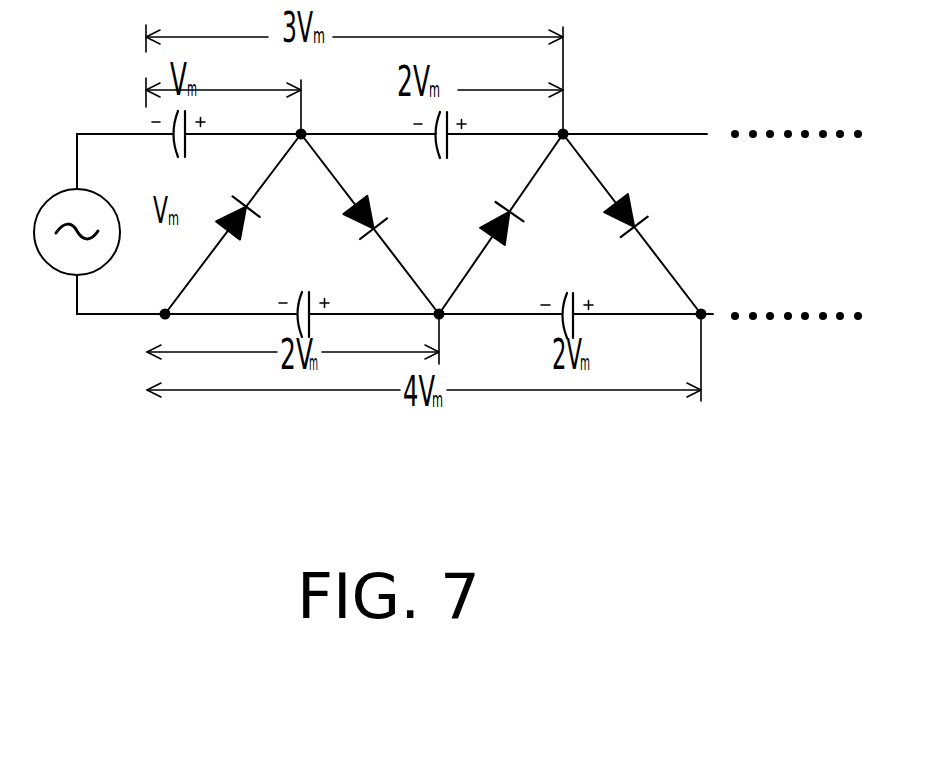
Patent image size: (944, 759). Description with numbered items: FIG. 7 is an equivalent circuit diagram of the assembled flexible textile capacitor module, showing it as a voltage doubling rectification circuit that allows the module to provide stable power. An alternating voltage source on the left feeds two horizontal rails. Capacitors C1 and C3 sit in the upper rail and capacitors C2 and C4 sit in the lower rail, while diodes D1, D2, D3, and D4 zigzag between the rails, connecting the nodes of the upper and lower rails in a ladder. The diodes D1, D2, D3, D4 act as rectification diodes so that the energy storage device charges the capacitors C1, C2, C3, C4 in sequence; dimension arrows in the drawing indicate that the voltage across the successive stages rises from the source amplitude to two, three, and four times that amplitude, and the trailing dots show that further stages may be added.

The first capacitor C1 is at (178, 158).
The second capacitor C2 is at (304, 290).
The third capacitor C3 is at (440, 159).
The fourth capacitor C4 is at (567, 292).
The first diode D1 is at (233, 224).
The second diode D2 is at (370, 224).
The third diode D3 is at (501, 224).
The fourth diode D4 is at (632, 224).